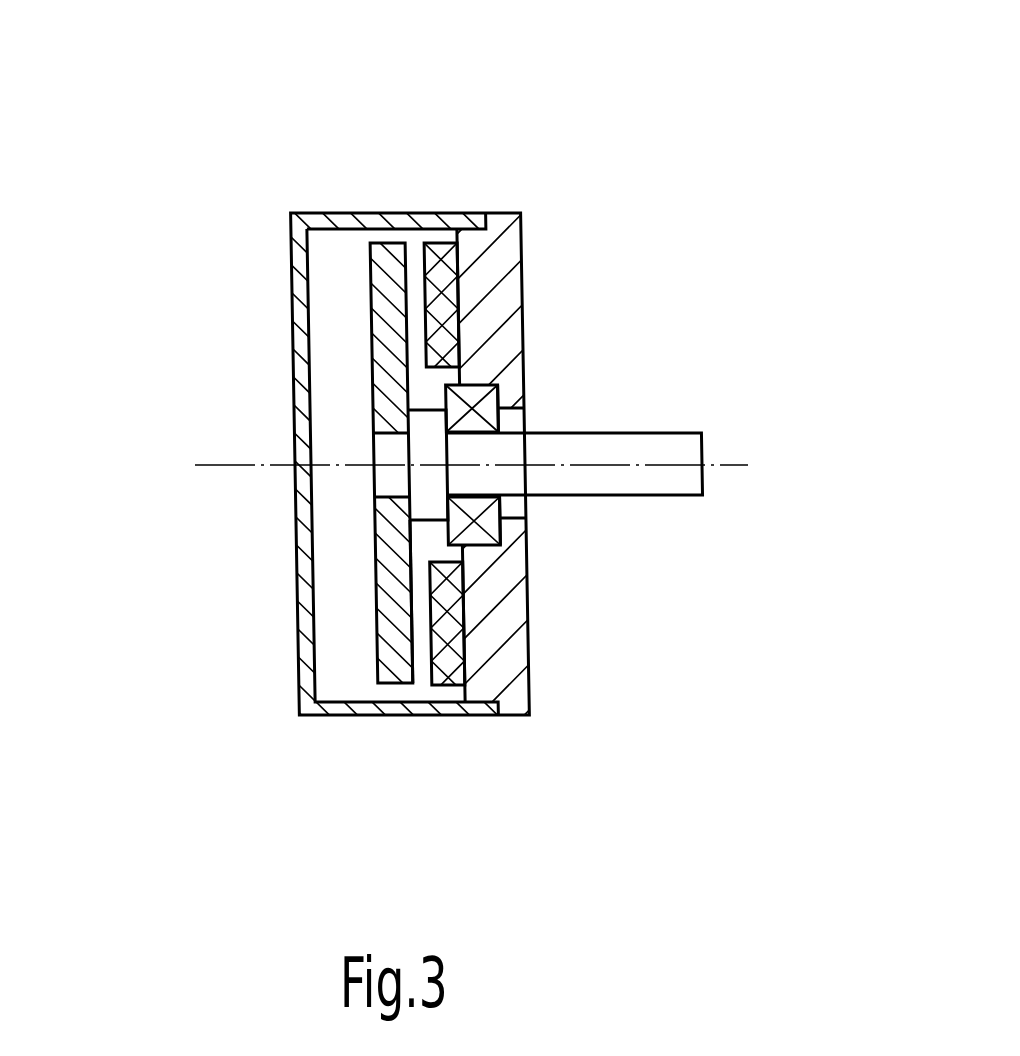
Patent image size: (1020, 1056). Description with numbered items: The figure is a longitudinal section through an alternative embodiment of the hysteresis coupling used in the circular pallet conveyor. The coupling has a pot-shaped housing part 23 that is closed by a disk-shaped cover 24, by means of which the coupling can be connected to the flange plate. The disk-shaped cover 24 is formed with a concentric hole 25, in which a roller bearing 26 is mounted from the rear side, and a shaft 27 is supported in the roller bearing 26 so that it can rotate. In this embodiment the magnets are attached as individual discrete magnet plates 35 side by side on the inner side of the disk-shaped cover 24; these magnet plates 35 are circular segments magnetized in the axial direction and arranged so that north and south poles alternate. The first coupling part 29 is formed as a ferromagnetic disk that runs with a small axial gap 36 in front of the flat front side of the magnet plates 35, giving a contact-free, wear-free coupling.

The pot-shaped housing part 23 is at (393, 213).
The disk-shaped cover 24 is at (483, 320).
The concentric hole 25 is at (512, 507).
The roller bearing 26 is at (503, 404).
The shaft 27 is at (680, 452).
The first coupling part 29 is at (373, 612).
The magnet plates 35 is at (457, 280).
The axial gap 36 is at (418, 665).